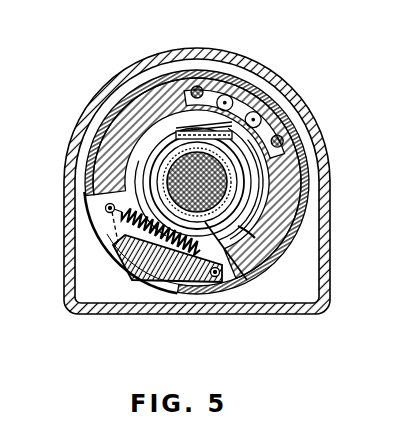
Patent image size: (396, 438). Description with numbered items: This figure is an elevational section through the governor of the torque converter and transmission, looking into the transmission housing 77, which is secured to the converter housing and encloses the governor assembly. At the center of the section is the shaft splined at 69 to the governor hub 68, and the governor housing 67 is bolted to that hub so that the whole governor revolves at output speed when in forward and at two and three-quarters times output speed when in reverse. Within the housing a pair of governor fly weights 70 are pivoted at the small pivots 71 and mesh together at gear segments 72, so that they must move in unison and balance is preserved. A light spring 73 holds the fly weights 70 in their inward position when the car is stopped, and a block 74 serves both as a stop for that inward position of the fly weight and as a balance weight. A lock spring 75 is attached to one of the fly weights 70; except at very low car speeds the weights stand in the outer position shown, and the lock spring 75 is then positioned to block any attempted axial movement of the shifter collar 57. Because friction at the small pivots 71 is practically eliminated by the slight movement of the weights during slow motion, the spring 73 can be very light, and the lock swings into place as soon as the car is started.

The shifter collar 57 is at (243, 232).
The governor housing 67 is at (262, 110).
The governor hub 68 is at (230, 236).
The spline connection 69 is at (213, 182).
The governor fly weights 70 is at (96, 135).
The pivots 71 is at (200, 90).
The gear segments 72 is at (246, 102).
The light spring 73 is at (115, 252).
The block 74 is at (138, 267).
The lock spring 75 is at (262, 130).
The transmission housing 77 is at (296, 316).